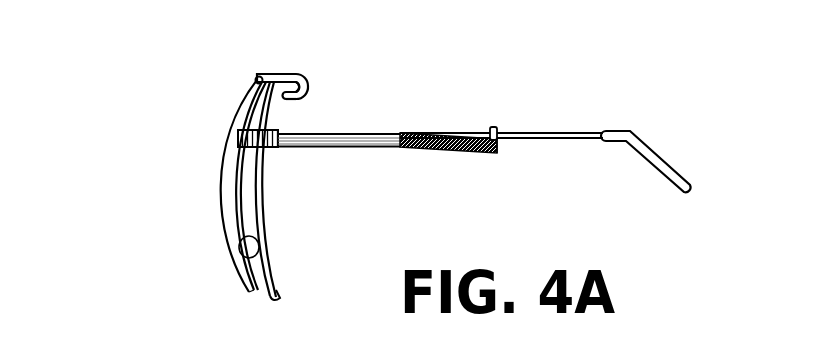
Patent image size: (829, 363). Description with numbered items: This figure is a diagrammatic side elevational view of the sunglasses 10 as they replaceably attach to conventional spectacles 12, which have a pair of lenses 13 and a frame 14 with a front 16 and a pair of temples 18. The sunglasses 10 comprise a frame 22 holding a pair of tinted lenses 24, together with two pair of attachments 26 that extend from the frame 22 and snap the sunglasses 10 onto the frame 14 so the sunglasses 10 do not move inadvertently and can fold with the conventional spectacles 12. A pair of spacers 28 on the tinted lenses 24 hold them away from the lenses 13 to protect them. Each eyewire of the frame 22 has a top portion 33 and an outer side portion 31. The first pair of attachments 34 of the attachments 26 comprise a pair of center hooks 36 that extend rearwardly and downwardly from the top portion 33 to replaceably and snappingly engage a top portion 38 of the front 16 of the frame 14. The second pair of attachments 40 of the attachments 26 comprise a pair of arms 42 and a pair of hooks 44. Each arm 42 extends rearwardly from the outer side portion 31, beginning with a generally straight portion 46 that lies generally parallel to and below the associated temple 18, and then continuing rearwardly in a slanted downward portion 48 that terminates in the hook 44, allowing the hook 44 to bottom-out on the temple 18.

The sunglasses 10 is at (341, 163).
The conventional spectacles 12 is at (547, 130).
The pair of lenses 13 is at (266, 188).
The frame 14 is at (587, 132).
The front 16 is at (283, 289).
The pair of temples 18 is at (578, 141).
The frame 22 is at (249, 292).
The pair of tinted lenses 24 is at (216, 158).
The two pair of attachments 26 is at (280, 72).
The pair of spacers 28 is at (272, 250).
The outer side portion 31 is at (238, 143).
The top portion 33 is at (255, 79).
The first pair of attachments 34 is at (282, 86).
The pair of center hooks 36 is at (292, 87).
The top portion 38 is at (287, 99).
The second pair of attachments 40 is at (392, 130).
The pair of arms 42 is at (402, 152).
The pair of hooks 44 is at (491, 127).
The generally straight portion 46 is at (351, 141).
The slanted downward portion 48 is at (477, 153).